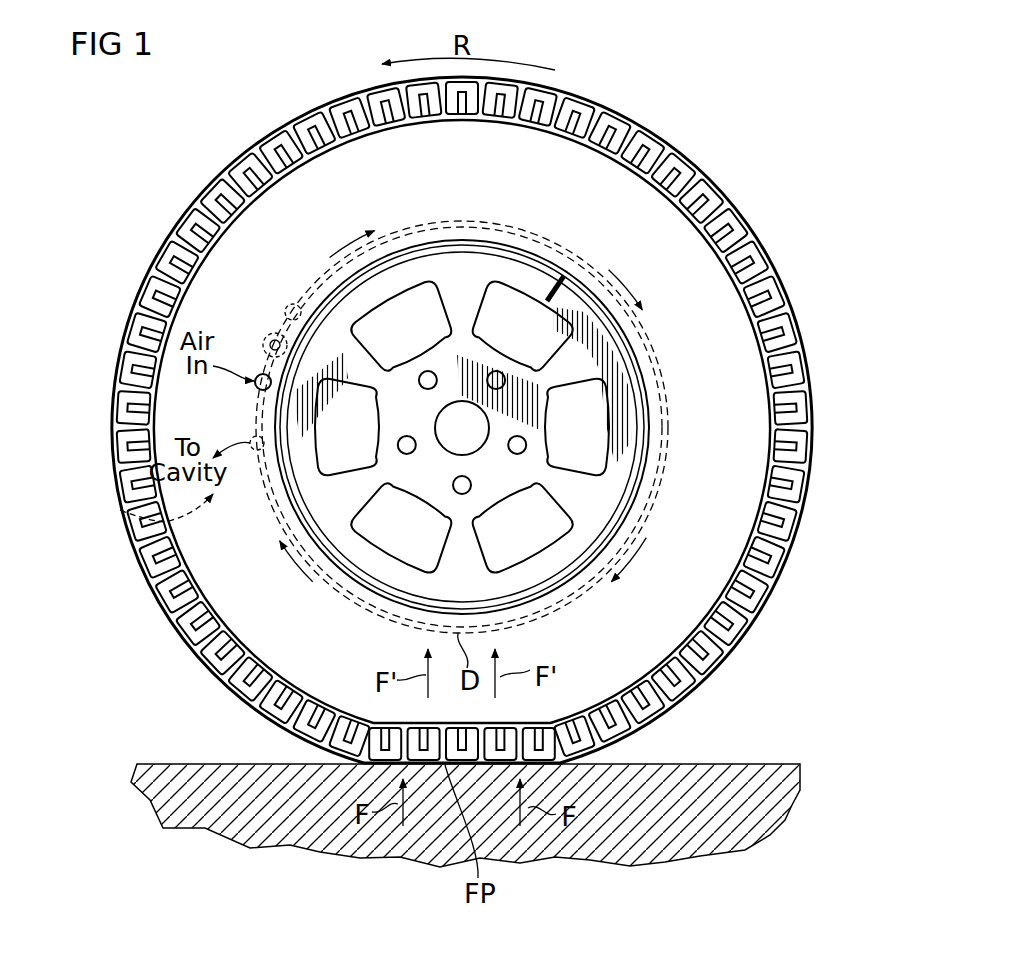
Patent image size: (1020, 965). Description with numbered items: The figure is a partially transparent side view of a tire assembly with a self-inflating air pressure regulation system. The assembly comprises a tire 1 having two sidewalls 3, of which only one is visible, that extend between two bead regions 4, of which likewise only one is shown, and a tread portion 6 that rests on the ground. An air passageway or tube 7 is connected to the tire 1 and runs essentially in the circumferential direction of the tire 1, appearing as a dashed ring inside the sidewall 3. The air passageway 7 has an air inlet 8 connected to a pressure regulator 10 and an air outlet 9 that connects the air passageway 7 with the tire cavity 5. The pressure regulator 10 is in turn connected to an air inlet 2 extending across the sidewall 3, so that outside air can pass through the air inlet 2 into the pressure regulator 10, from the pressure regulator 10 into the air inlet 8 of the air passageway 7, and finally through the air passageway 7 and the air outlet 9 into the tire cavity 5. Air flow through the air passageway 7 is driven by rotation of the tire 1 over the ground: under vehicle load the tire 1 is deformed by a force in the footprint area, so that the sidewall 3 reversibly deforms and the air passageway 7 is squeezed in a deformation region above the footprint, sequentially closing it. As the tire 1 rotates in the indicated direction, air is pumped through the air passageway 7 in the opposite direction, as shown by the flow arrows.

The tire 1 is at (175, 177).
The air inlet 2 is at (258, 390).
The sidewall 3 is at (244, 583).
The bead region 4 is at (357, 590).
The tire cavity 5 is at (135, 526).
The tread portion 6 is at (118, 497).
The air passageway 7 is at (470, 222).
The air inlet of the air passageway 8 is at (290, 304).
The air outlet 9 is at (254, 452).
The pressure regulator 10 is at (262, 332).